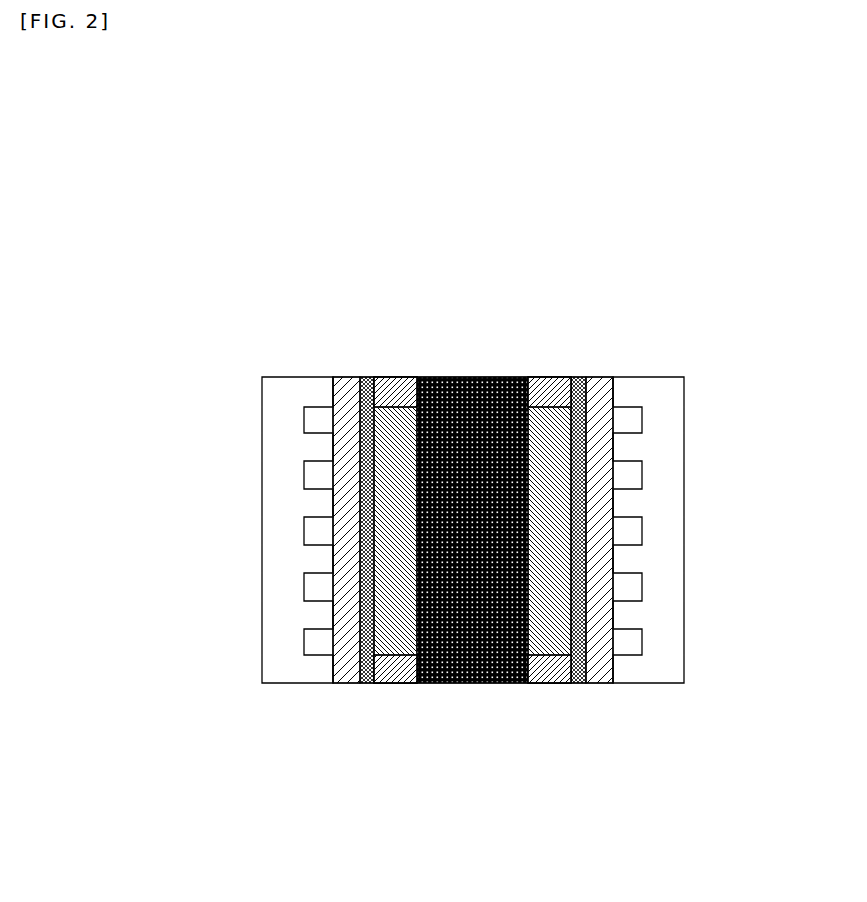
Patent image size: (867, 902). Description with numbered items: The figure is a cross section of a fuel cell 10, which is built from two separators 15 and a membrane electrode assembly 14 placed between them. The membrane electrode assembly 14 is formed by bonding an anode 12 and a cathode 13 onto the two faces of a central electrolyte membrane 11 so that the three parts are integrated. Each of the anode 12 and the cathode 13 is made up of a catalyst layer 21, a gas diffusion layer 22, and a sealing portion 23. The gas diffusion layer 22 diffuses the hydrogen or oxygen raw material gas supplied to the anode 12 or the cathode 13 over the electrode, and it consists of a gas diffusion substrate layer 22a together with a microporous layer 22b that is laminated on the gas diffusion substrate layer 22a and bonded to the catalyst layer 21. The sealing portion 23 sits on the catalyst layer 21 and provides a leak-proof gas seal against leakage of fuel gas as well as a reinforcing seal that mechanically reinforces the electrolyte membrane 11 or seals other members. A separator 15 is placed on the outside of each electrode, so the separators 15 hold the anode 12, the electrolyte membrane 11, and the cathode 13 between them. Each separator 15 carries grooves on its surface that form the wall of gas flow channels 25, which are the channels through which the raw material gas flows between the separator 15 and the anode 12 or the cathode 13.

The fuel cell 10 is at (700, 186).
The electrolyte membrane 11 is at (472, 683).
The anode 12 is at (592, 793).
The cathode 13 is at (383, 793).
The membrane electrode assembly 14 is at (325, 860).
The separator 15 is at (283, 377).
The catalyst layer 21 is at (387, 683).
The gas diffusion layer 22 is at (362, 683).
The gas diffusion substrate layer 22a is at (345, 377).
The microporous layer 22b is at (372, 377).
The sealing portion 23 is at (550, 377).
The gas flow channel 25 is at (313, 452).